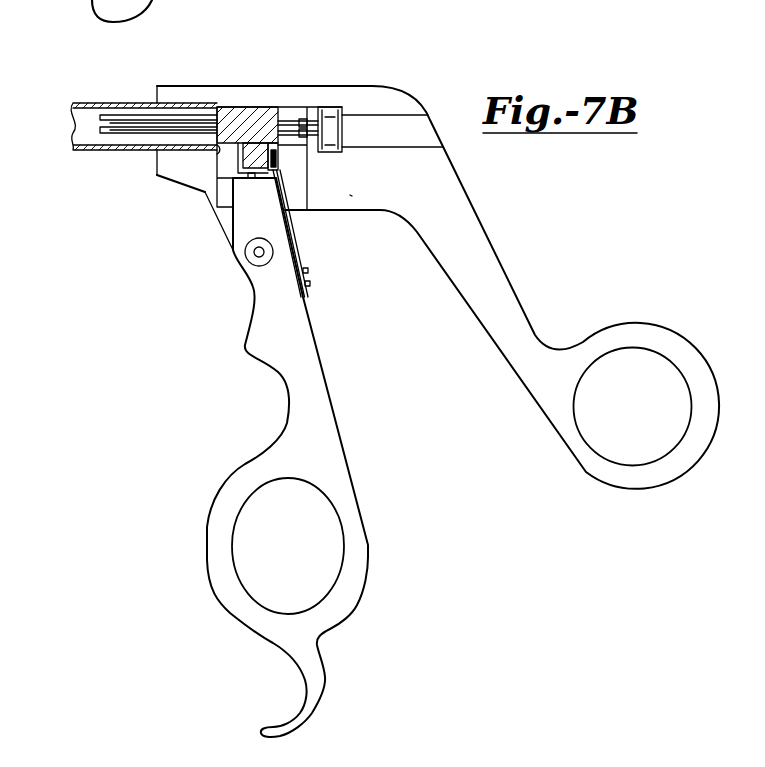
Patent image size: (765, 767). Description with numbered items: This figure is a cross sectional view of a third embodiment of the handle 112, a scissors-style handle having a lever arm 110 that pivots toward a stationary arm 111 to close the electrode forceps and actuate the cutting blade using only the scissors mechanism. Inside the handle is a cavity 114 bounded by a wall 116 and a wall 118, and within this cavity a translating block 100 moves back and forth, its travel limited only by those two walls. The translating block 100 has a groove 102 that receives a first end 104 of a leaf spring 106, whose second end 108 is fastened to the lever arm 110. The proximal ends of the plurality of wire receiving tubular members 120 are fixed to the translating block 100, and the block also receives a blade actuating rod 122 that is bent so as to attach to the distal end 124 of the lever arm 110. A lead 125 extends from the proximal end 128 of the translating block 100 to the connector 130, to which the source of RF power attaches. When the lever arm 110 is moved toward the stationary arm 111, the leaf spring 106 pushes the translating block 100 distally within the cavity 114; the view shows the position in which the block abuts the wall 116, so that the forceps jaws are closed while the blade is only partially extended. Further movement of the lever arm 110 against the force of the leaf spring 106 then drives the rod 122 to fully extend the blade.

The translating block 100 is at (227, 107).
The groove 102 is at (260, 143).
The first end 104 is at (280, 153).
The leaf spring 106 is at (283, 180).
The second end 108 is at (305, 299).
The lever arm 110 is at (323, 428).
The stationary arm 111 is at (493, 245).
The handle 112 is at (400, 86).
The cavity 114 is at (228, 181).
The wall 116 is at (216, 152).
The wall 118 is at (350, 195).
The wire receiving tubular members 120 is at (110, 138).
The blade actuating rod 122 is at (137, 122).
The distal end 124 is at (247, 195).
The lead 125 is at (303, 130).
The proximal end 128 is at (292, 125).
The connector 130 is at (333, 107).